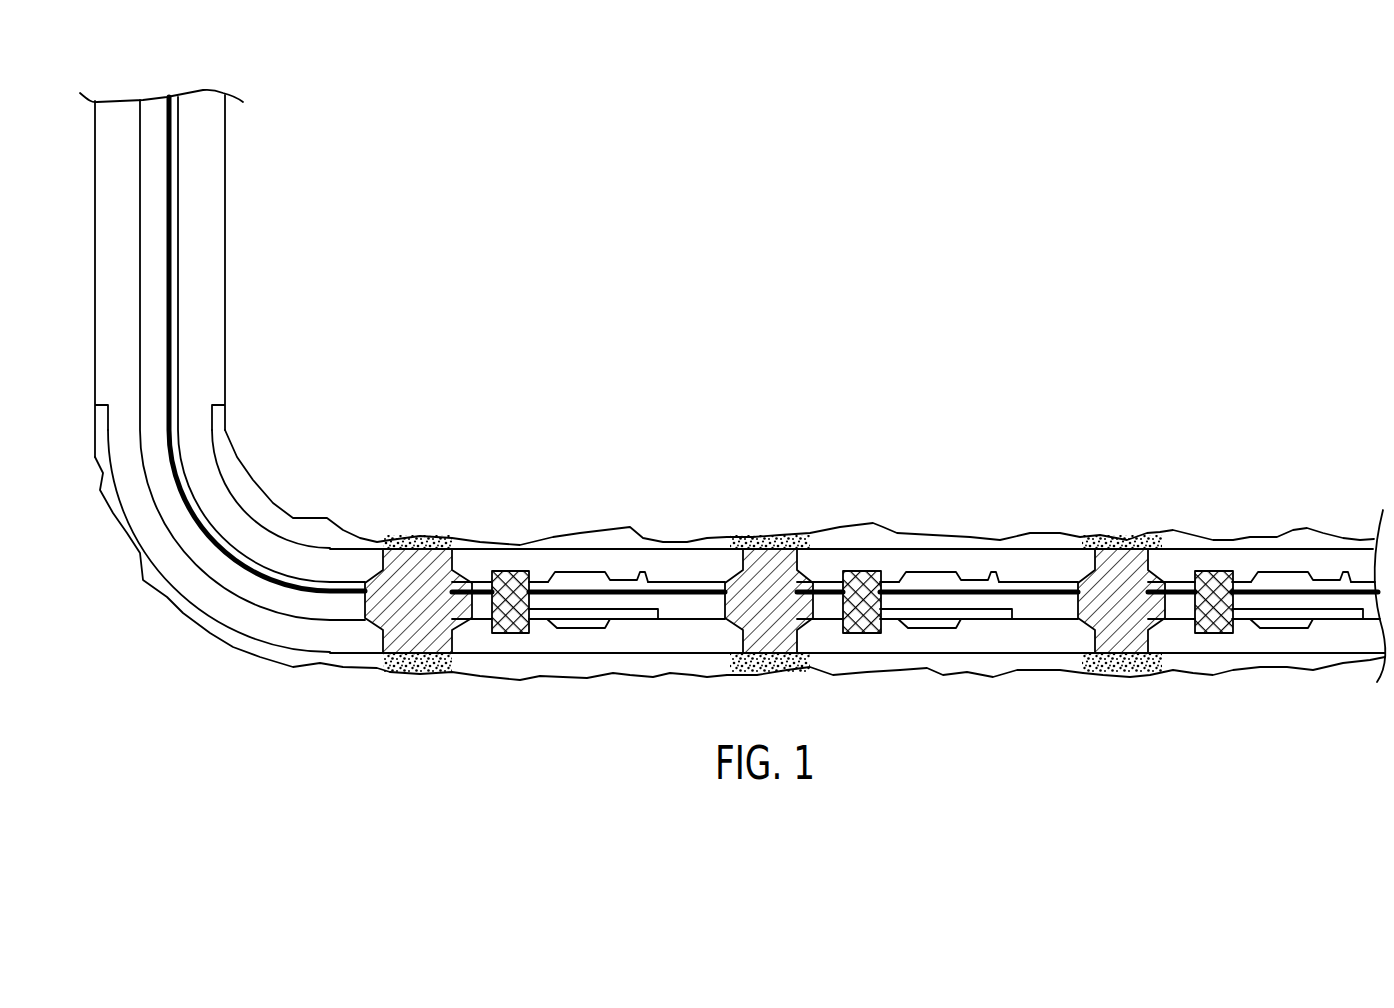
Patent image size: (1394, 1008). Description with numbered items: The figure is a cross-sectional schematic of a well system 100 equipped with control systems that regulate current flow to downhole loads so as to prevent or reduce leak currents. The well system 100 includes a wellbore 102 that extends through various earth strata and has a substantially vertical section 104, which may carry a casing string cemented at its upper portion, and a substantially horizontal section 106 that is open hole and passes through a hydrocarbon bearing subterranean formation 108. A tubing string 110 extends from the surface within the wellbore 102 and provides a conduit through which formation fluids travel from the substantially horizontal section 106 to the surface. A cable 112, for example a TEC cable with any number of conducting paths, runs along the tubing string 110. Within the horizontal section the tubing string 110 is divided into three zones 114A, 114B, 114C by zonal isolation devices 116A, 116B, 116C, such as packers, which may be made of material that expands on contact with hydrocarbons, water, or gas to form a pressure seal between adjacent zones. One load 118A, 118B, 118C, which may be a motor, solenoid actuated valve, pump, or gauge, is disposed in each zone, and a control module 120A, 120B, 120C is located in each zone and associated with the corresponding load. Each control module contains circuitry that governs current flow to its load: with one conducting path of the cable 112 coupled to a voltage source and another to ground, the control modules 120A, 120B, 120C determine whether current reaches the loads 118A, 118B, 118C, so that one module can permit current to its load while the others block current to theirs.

The well system 100 is at (372, 293).
The wellbore 102 is at (213, 430).
The substantially vertical section 104 is at (226, 234).
The substantially horizontal section 106 is at (705, 547).
The hydrocarbon bearing subterranean formation 108 is at (1142, 434).
The tubing string 110 is at (150, 103).
The cable 112 is at (168, 97).
The zone 114A is at (497, 647).
The zone 114B is at (852, 645).
The zone 114C is at (1202, 645).
The zonal isolation device 116A is at (417, 560).
The zonal isolation device 116B is at (772, 560).
The zonal isolation device 116C is at (1123, 560).
The load 118A is at (582, 620).
The load 118B is at (933, 620).
The load 118C is at (1285, 620).
The control module 120A is at (503, 580).
The control module 120B is at (858, 580).
The control module 120C is at (1207, 580).